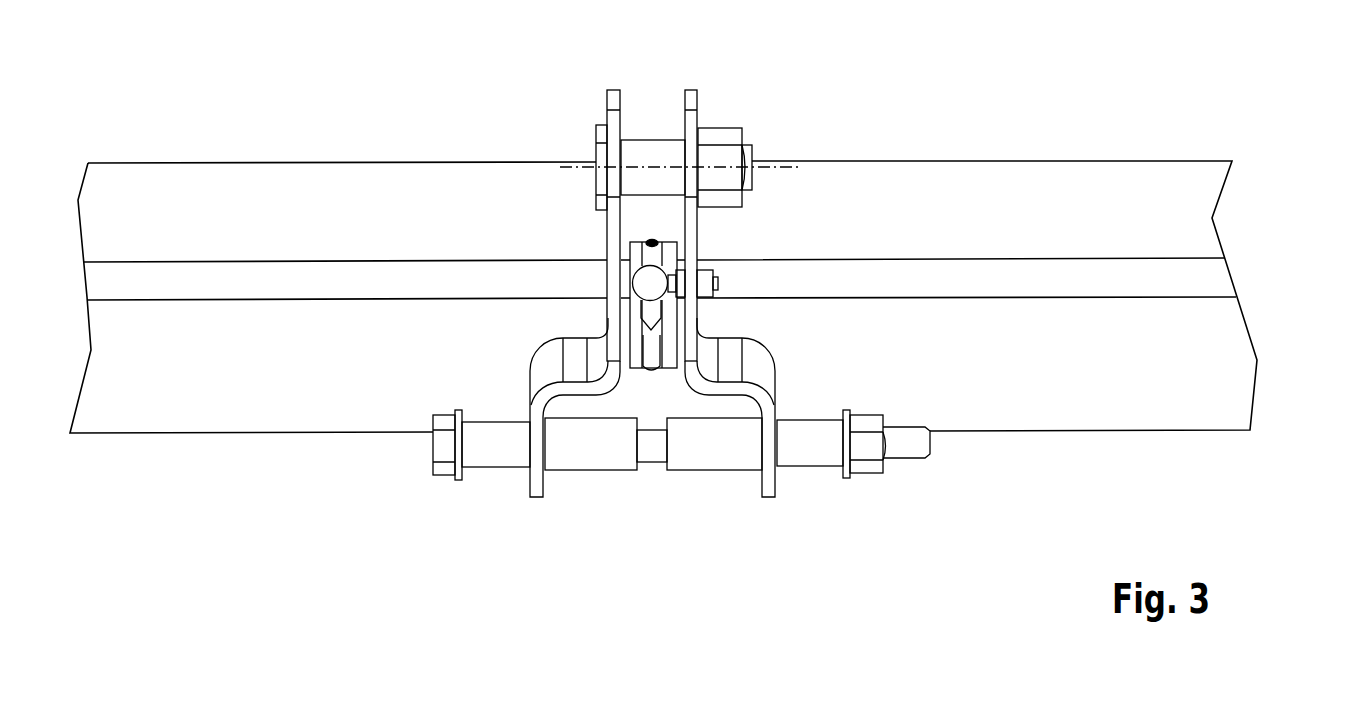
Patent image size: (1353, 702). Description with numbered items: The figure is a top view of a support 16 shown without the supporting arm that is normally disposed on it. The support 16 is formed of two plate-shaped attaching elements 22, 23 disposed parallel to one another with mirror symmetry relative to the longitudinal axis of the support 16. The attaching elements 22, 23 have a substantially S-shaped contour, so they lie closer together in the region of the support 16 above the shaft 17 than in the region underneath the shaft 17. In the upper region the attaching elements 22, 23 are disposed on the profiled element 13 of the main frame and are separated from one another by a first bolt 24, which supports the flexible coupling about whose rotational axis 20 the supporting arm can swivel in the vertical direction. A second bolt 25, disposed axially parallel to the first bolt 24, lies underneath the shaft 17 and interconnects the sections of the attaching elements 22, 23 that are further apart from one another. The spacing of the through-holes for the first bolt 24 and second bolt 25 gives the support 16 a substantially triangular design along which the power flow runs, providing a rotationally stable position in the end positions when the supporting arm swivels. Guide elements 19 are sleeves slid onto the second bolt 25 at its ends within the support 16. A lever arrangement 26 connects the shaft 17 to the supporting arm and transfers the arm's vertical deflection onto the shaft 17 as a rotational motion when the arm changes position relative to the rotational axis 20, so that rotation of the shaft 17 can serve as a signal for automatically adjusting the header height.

The profiled element 13 is at (1125, 180).
The support 16 is at (697, 100).
The shaft 17 is at (1193, 278).
The guide elements 19 is at (487, 455).
The rotational axis 20 is at (803, 167).
The attaching element 22 is at (615, 235).
The attaching element 23 is at (695, 231).
The first bolt 24 is at (648, 150).
The second bolt 25 is at (912, 447).
The lever arrangement 26 is at (657, 395).